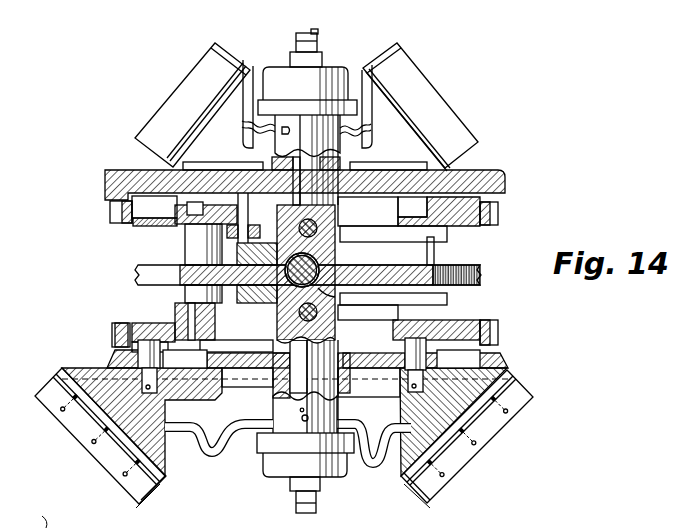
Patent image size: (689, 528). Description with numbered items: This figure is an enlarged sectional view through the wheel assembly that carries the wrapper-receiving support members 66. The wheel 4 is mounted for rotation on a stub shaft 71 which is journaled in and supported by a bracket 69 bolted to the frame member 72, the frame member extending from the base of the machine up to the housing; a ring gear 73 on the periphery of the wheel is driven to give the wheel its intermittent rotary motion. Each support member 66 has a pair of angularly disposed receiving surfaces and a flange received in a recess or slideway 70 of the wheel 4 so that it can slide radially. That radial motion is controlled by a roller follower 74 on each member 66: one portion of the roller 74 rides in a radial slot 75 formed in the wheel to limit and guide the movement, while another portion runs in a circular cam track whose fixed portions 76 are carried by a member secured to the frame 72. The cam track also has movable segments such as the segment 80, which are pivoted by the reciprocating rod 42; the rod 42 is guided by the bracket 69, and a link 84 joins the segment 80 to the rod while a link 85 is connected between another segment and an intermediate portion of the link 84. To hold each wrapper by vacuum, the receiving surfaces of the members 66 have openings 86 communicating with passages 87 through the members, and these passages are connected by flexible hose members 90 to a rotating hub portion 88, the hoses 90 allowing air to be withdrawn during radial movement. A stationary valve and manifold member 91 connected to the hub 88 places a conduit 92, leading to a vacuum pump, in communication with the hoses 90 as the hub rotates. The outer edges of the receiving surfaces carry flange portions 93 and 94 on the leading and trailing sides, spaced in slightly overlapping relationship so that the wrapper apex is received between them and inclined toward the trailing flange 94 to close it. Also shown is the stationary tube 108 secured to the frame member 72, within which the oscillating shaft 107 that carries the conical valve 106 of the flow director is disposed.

The wheel 4 is at (135, 172).
The reciprocating rod 42 is at (321, 230).
The support member 66 is at (186, 80).
The bracket 69 is at (429, 250).
The recess or slideway 70 is at (230, 376).
The stub shaft 71 is at (344, 166).
The frame member 72 is at (137, 272).
The ring gear 73 is at (111, 216).
The roller follower 74 is at (126, 348).
The radial slot 75 is at (196, 369).
The fixed portion of cam track 76 is at (441, 207).
The movable segment 80 is at (178, 214).
The link 84 is at (225, 236).
The link 85 is at (379, 233).
The opening 86 is at (132, 482).
The passage 87 is at (88, 421).
The rotating hub portion 88 is at (282, 144).
The flexible hose member 90 is at (270, 125).
The stationary valve and manifold member 91 is at (275, 77).
The conduit 92 is at (318, 42).
The flange portion 93 is at (236, 46).
The trailing flange 94 is at (250, 58).
The conical valve 106 is at (26, 520).
The oscillating shaft 107 is at (286, 274).
The stationary tube 108 is at (335, 297).